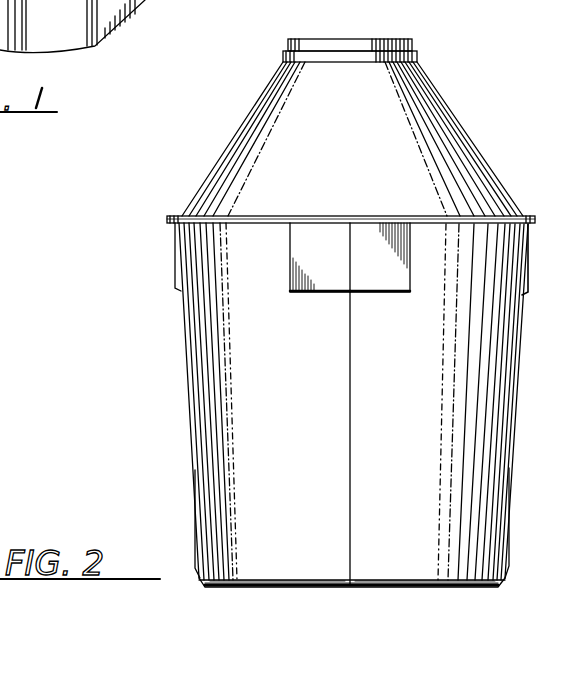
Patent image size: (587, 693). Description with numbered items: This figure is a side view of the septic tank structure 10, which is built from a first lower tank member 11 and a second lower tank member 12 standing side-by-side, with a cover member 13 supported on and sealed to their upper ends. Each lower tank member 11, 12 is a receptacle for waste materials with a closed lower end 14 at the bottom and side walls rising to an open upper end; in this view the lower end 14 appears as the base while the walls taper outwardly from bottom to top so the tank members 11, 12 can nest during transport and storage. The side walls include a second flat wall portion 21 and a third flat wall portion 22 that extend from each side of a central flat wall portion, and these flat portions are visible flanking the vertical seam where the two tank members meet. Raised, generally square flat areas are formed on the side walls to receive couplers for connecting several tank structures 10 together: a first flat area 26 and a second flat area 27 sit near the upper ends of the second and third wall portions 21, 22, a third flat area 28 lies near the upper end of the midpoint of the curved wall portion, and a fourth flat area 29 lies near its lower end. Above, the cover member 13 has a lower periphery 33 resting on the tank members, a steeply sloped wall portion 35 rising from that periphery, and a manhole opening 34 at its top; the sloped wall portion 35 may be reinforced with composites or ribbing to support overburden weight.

The septic tank structure 10 is at (145, 327).
The first lower tank member 11 is at (215, 400).
The second lower tank member 12 is at (495, 413).
The cover member 13 is at (418, 110).
The closed lower end 14 is at (386, 590).
The second flat wall portion 21 is at (279, 562).
The third flat wall portion 22 is at (415, 565).
The first flat area 26 is at (320, 276).
The second flat area 27 is at (382, 278).
The third flat area 28 is at (175, 263).
The fourth flat area 29 is at (196, 540).
The lower periphery 33 is at (178, 217).
The manhole opening 34 is at (347, 39).
The sloped wall portion 35 is at (455, 166).